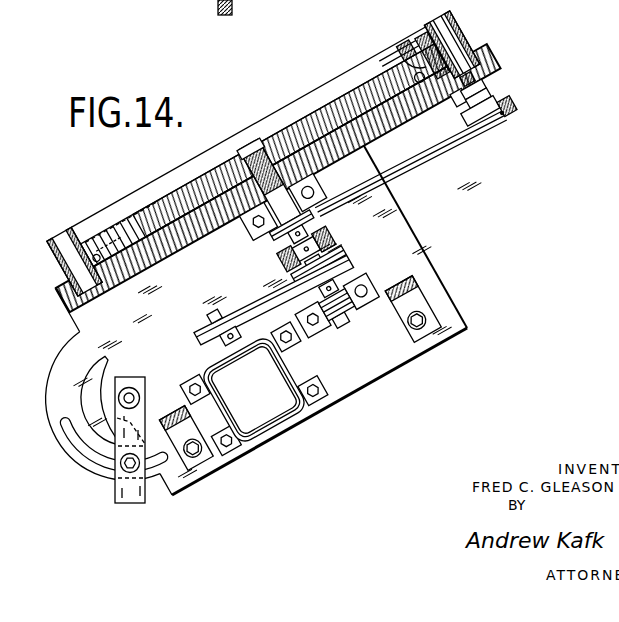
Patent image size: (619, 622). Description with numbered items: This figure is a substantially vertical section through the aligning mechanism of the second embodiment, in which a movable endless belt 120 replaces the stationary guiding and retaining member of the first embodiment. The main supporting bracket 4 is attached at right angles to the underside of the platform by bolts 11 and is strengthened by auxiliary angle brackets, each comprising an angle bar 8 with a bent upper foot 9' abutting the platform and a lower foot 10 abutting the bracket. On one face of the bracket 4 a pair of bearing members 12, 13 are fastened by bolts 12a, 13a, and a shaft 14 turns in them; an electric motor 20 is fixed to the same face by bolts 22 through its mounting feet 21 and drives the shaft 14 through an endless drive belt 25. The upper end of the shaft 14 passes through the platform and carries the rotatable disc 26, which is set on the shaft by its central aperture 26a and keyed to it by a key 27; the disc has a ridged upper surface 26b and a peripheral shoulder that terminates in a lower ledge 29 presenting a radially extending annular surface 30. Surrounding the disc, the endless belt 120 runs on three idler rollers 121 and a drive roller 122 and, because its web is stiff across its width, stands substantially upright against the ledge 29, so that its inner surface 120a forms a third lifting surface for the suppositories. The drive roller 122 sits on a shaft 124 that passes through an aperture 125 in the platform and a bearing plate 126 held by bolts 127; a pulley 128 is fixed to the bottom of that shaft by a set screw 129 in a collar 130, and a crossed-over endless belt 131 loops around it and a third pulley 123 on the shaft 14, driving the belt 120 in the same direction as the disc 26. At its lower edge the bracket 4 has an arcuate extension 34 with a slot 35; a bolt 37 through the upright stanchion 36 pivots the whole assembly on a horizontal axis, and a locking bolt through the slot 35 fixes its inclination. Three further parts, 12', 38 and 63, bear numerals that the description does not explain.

The main supporting bracket 4 is at (422, 256).
The angle bar 8 is at (173, 415).
The upper foot of shorter auxiliary bracket 9' is at (97, 228).
The foot 10 is at (203, 457).
The bolts 11 is at (195, 443).
The bearing member 12 is at (252, 223).
The rail end block 12' is at (61, 254).
The bolts 12a is at (313, 193).
The bearing member 13 is at (362, 285).
The bolts 13a is at (362, 299).
The shaft 14 is at (342, 323).
The electric motor 20 is at (253, 423).
The mounting feet 21 is at (312, 398).
The bolts 22 is at (318, 390).
The endless drive belt 25 is at (250, 312).
The rotatable disc 26 is at (208, 198).
The central aperture 26a is at (257, 163).
The upper surface of disc 26b is at (183, 196).
The key 27 is at (281, 155).
The lower ledge 29 is at (410, 87).
The radially extending annular surface 30 is at (430, 77).
The arcuate extension 34 is at (58, 365).
The slot 35 is at (73, 443).
The upright stanchion 36 is at (130, 502).
The bolt 37 is at (130, 389).
The clamp bolt 38 is at (123, 470).
The gear 63 is at (333, 238).
The movable endless belt 120 is at (462, 41).
The inner surface of belt 120a is at (408, 45).
The idler rollers 121 is at (72, 253).
The drive roller 122 is at (443, 35).
The third pulley 123 is at (310, 228).
The shaft 124 is at (461, 92).
The aperture 125 is at (470, 74).
The bearing plate 126 is at (488, 81).
The bolts 127 is at (490, 89).
The pulley 128 is at (497, 122).
The set screw 129 is at (503, 114).
The collar 130 is at (478, 112).
The crossed-over endless belt 131 is at (430, 152).